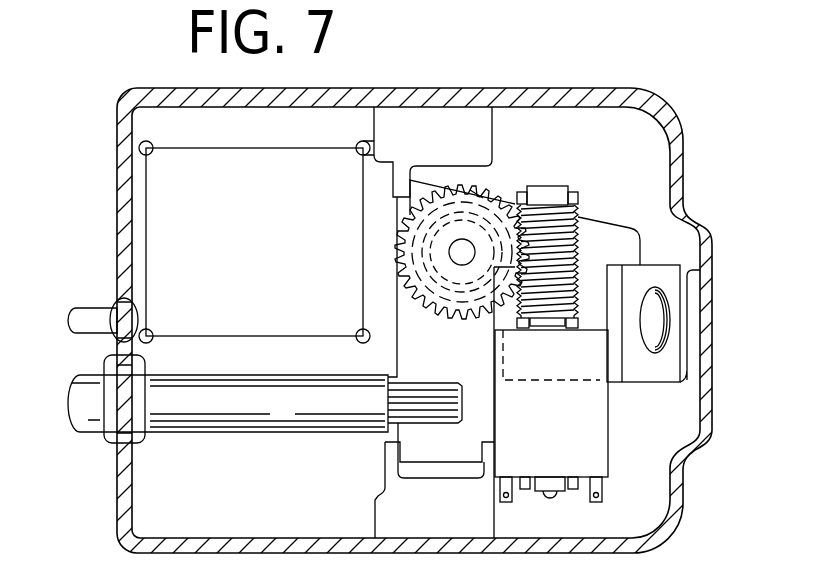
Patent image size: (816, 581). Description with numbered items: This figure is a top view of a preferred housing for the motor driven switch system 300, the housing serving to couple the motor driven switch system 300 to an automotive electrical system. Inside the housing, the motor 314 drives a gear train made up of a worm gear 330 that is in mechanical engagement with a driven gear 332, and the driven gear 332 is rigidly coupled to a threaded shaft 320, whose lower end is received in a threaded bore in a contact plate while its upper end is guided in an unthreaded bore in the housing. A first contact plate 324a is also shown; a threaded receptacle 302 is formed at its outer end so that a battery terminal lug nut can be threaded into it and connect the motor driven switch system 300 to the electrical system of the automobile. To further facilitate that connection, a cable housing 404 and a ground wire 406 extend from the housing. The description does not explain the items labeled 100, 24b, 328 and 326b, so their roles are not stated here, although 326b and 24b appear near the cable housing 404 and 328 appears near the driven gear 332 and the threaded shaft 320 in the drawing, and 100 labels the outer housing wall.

The housing 100 is at (682, 497).
The motor driven switch system 300 is at (263, 252).
The shaft support 24b is at (465, 360).
The first contact plate 324a is at (590, 222).
The gear 328 is at (423, 278).
The threaded shaft 320 is at (455, 256).
The driven gear 332 is at (483, 198).
The worm gear 330 is at (577, 272).
The motor 314 is at (562, 408).
The threaded receptacle 302 is at (662, 277).
The splined shaft end 326b is at (412, 432).
The cable housing 404 is at (265, 432).
The ground wire 406 is at (88, 308).